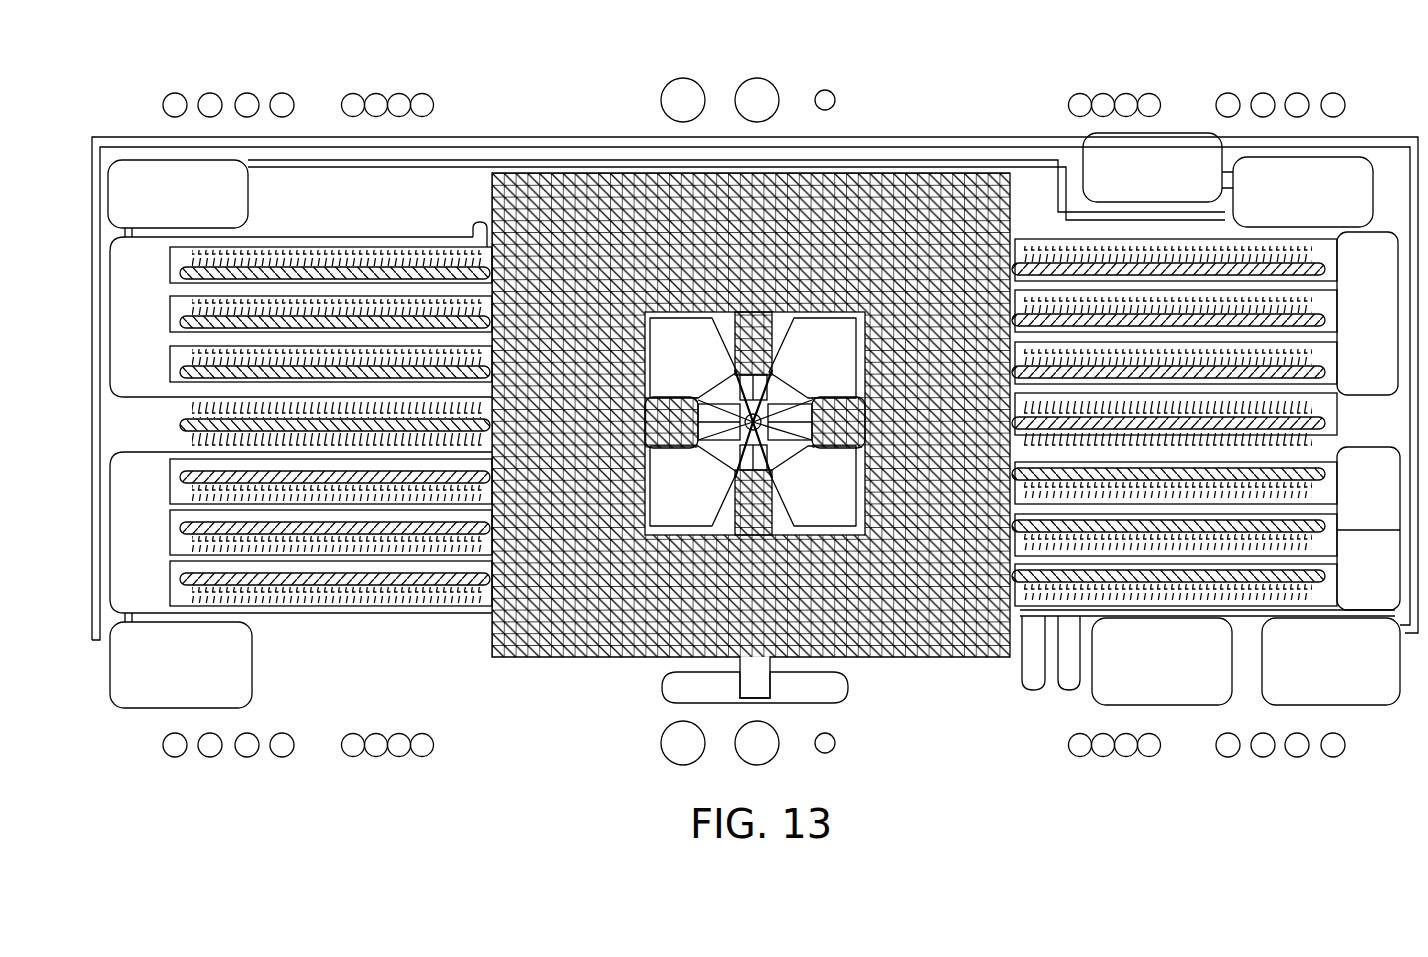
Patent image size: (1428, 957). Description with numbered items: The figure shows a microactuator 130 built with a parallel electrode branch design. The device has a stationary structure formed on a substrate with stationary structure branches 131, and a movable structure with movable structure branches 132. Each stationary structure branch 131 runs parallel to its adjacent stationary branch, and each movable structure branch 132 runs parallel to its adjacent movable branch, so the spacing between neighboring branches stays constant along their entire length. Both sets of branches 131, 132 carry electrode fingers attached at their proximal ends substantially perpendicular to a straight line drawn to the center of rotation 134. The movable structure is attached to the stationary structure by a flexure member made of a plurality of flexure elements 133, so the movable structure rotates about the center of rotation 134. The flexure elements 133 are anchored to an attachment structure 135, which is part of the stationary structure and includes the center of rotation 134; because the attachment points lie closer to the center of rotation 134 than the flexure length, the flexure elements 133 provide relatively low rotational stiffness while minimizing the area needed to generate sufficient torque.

The microactuator 130 is at (244, 78).
The stationary structure branches 131 is at (440, 240).
The movable structure branches 132 is at (298, 258).
The flexure elements 133 is at (735, 385).
The center of rotation 134 is at (765, 405).
The attachment structure 135 is at (834, 354).